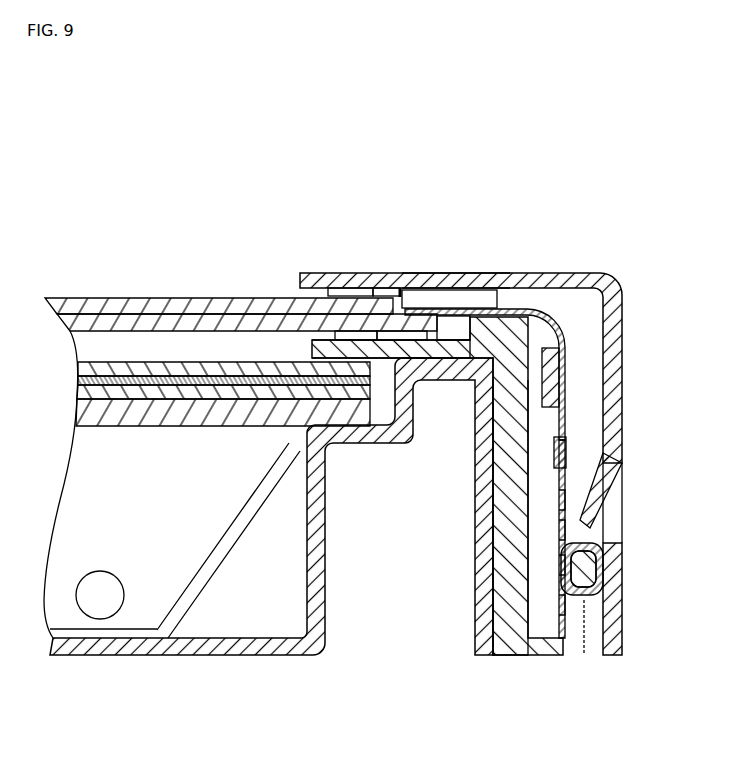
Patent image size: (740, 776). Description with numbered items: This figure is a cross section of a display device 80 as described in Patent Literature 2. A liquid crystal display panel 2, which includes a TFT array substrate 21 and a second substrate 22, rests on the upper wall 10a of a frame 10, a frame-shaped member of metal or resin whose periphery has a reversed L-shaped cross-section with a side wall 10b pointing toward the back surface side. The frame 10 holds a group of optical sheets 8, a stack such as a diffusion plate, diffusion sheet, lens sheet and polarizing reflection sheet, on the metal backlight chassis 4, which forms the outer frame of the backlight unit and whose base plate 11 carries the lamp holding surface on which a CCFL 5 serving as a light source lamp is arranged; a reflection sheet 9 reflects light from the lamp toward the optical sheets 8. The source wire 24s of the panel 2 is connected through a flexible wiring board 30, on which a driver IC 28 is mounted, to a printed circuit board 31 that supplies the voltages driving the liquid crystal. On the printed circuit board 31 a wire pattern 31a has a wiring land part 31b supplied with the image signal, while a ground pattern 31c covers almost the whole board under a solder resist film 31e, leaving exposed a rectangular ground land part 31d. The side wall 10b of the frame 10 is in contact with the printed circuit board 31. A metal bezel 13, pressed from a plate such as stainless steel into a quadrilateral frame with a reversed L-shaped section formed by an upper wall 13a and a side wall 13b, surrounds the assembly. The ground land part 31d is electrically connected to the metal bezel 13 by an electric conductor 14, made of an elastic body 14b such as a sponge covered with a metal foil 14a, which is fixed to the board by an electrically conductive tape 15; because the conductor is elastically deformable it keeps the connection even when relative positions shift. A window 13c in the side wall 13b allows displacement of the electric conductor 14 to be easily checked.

The liquid crystal display panel 2 is at (241, 262).
The TFT array substrate 21 is at (105, 322).
The second substrate 22 is at (150, 314).
The backlight chassis 4 is at (237, 660).
The CCFL 5 is at (97, 618).
The group of optical sheets 8 is at (76, 362).
The reflection sheet 9 is at (215, 538).
The frame 10 is at (437, 533).
The upper wall 10a is at (383, 348).
The side wall 10b is at (512, 556).
The bottom plate 11 is at (183, 660).
The metal bezel 13 is at (497, 452).
The upper wall 13a is at (456, 273).
The side wall 13b is at (612, 658).
The window 13c is at (617, 520).
The electric conductor 14 is at (631, 596).
The metal foil 14a is at (622, 613).
The elastic body 14b is at (620, 592).
The electrically conductive tape 15 is at (583, 640).
The source wire 24s is at (403, 290).
The driver IC 28 is at (545, 343).
The flexible wiring board 30 is at (497, 309).
The printed circuit board 31 is at (546, 580).
The wire pattern 31a is at (557, 500).
The wiring land part 31b is at (568, 440).
The ground pattern 31c is at (557, 602).
The ground land part 31d is at (603, 560).
The solder resist film 31e is at (570, 530).
The display device 80 is at (597, 215).